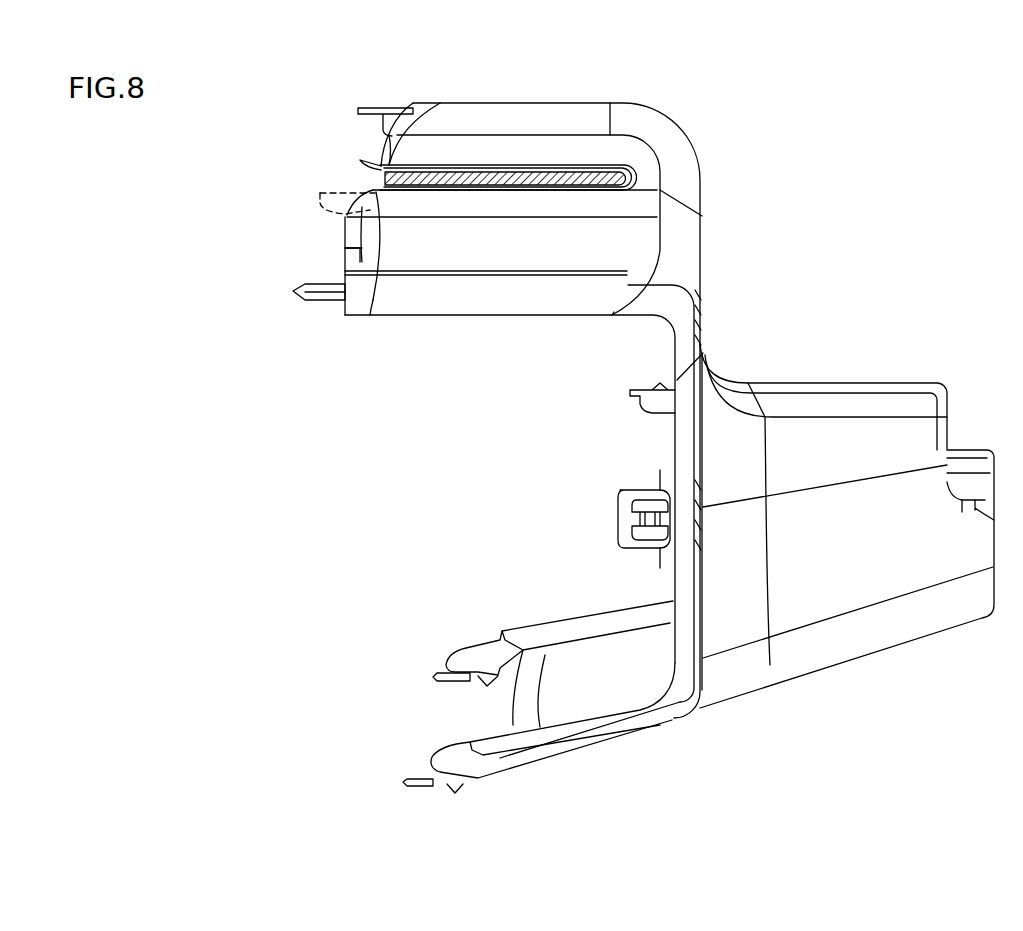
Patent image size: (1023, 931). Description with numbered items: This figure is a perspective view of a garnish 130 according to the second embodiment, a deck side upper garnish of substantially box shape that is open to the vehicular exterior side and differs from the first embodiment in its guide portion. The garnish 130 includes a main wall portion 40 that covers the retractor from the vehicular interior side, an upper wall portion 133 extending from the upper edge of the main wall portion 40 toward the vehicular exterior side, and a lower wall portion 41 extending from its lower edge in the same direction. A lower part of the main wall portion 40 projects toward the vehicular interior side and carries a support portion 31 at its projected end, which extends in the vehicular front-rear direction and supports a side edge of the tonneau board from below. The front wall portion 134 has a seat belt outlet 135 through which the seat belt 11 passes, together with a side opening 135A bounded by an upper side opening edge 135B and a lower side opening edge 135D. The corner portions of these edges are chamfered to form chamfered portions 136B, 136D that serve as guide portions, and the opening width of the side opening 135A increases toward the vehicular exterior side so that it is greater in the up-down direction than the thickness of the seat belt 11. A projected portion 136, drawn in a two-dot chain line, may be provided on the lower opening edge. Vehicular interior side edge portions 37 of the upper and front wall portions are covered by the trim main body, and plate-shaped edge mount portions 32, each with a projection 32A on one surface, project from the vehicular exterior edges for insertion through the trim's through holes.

The garnish 130 is at (708, 121).
The upper wall portion 133 is at (613, 103).
The seat belt outlet 135 is at (552, 177).
The seat belt 11 is at (497, 177).
The side opening 135A is at (367, 167).
The upper side opening edge 135B is at (388, 150).
The lower side opening edge 135D is at (374, 285).
The projected portion 136 is at (323, 200).
The chamfered portion 136B is at (367, 168).
The chamfered portion 136D is at (373, 193).
The front wall portion 134 is at (553, 203).
The vehicular interior side edge portion 37 is at (353, 248).
The edge mount portion 32 is at (325, 303).
The projection 32A is at (648, 517).
The main wall portion 40 is at (705, 263).
The support portion 31 is at (973, 460).
The lower wall portion 41 is at (613, 658).